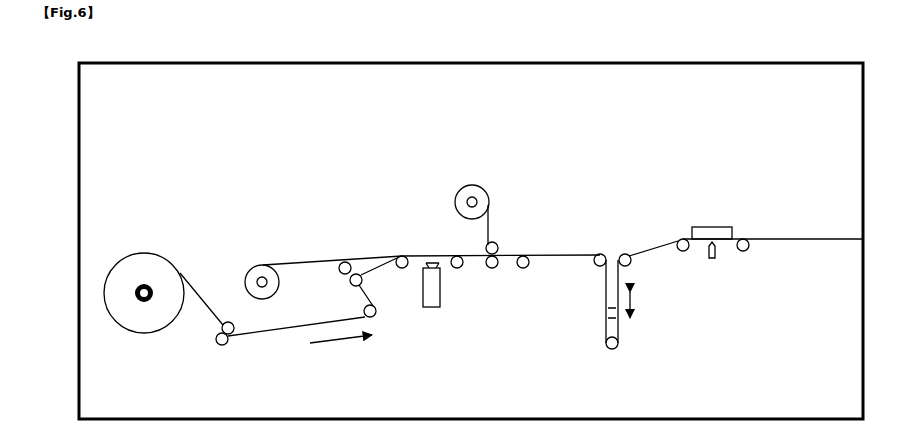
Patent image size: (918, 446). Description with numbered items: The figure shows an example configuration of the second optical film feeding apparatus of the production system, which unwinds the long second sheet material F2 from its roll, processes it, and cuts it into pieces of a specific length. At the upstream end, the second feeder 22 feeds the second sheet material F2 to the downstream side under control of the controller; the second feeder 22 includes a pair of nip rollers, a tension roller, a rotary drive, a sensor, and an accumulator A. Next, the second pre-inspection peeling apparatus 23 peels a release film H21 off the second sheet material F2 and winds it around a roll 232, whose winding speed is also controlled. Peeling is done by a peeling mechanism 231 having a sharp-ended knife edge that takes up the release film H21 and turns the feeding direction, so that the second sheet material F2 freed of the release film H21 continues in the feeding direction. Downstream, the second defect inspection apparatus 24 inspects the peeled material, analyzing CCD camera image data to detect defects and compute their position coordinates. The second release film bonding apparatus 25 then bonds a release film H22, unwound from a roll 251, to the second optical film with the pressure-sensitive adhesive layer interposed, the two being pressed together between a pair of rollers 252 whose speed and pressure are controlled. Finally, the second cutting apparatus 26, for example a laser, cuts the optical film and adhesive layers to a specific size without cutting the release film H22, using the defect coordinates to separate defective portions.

The second sheet material F2 is at (138, 253).
The second feeder 22 is at (283, 341).
The roll 232 is at (263, 264).
The release film H21 is at (318, 260).
The peeling mechanism 231 is at (364, 270).
The second pre-inspection peeling apparatus 23 is at (382, 212).
The second defect inspection apparatus 24 is at (432, 307).
The roll 251 is at (463, 184).
The release film H22 is at (486, 231).
The pair of rollers 252 is at (494, 238).
The second release film bonding apparatus 25 is at (527, 232).
The accumulator A is at (623, 357).
The second cutting apparatus 26 is at (712, 259).